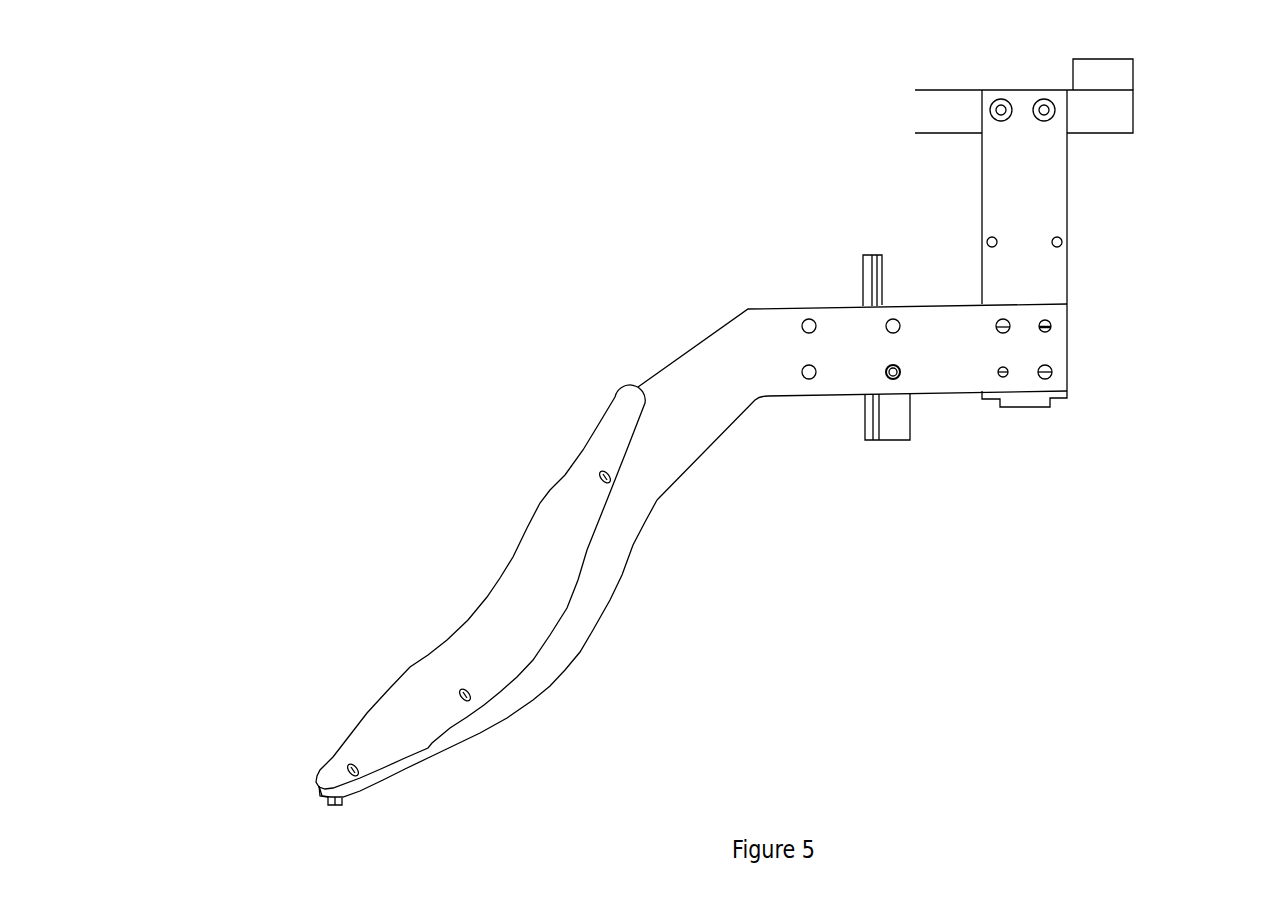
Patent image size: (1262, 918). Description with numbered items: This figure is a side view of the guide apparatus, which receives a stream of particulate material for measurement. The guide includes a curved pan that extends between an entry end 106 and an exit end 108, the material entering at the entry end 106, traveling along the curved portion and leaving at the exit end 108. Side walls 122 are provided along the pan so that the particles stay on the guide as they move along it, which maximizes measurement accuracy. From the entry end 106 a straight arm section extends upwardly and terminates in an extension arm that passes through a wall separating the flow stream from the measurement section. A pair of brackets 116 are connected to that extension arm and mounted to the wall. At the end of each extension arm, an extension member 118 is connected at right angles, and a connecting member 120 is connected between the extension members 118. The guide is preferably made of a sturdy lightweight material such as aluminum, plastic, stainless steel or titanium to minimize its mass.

The entry end 106 is at (597, 412).
The exit end 108 is at (320, 752).
The brackets 116 is at (872, 423).
The extension member 118 is at (1038, 189).
The connecting member 120 is at (1102, 68).
The side walls 122 is at (415, 715).